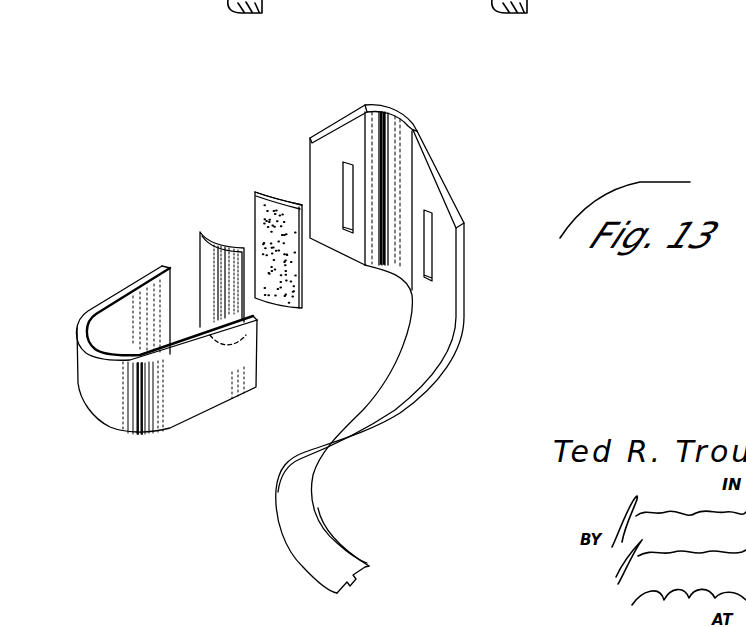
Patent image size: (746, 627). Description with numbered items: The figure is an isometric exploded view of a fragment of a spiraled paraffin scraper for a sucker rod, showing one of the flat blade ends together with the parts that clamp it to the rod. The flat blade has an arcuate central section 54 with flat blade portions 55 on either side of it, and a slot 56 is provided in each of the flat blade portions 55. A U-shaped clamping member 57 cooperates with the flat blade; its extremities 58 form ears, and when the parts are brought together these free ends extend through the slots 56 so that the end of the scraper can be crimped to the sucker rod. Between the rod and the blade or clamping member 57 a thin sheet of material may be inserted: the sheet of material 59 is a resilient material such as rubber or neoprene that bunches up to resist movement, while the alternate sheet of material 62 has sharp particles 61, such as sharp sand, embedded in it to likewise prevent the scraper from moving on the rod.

The arcuate central section 54 is at (383, 111).
The blade portions 55 is at (338, 118).
The slots 56 is at (350, 233).
The U-shaped clamping member 57 is at (157, 424).
The extremities 58 is at (148, 296).
The sheet of material 59 is at (204, 246).
The sharp particles 61 is at (270, 206).
The sheet of material 62 is at (256, 191).